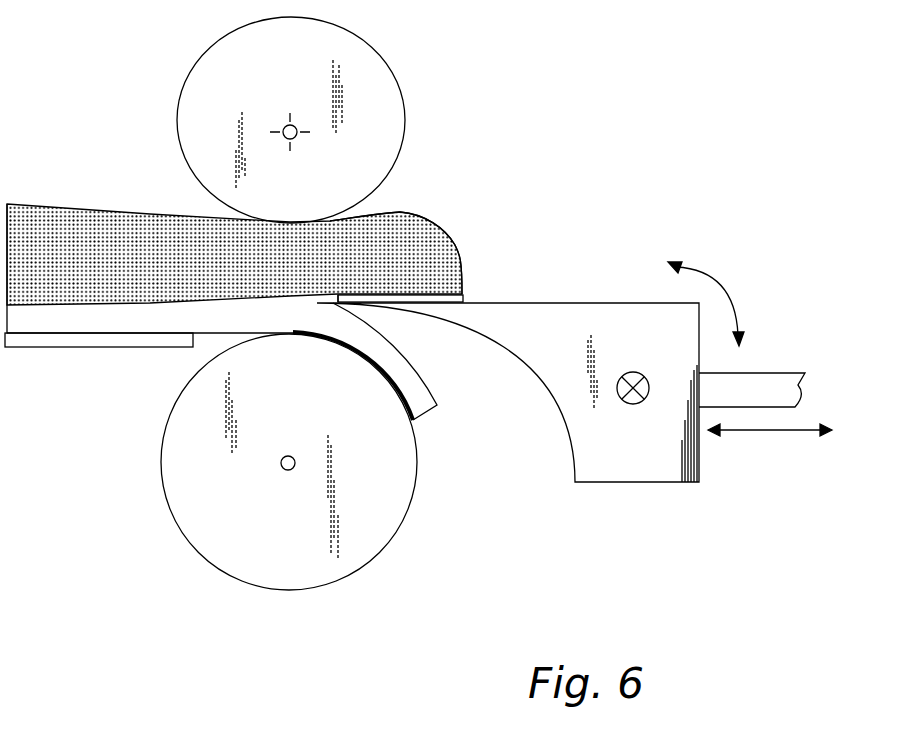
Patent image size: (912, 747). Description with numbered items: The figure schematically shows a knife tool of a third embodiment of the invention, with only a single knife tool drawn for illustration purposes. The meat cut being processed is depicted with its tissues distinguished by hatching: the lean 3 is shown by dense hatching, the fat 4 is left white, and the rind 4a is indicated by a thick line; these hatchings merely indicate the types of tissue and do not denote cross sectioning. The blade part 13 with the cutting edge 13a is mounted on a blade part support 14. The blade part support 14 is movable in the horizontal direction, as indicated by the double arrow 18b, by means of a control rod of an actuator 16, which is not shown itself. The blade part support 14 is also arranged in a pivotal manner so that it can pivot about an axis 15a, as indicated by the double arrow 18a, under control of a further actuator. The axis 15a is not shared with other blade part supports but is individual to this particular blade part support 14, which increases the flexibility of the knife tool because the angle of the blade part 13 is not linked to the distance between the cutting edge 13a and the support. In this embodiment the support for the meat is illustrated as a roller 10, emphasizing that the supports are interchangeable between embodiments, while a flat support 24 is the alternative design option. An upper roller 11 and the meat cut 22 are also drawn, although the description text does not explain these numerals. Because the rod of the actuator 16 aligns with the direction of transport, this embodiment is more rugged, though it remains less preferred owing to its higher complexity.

The sewing material edge 3 is at (428, 235).
The folding member 4 is at (413, 385).
The curved guide surface of folding member 4a is at (372, 372).
The lower feed roller 10 is at (285, 590).
The upper feed roller 11 is at (373, 80).
The guide plate 13 is at (397, 302).
The tip of guide plate 13a is at (338, 298).
The guide holder 14 is at (542, 303).
The pivot axis 15a is at (614, 396).
The drive rod 16 is at (767, 373).
The pivoting movement 18a is at (725, 284).
The linear movement 18b is at (770, 435).
The sewing material 22 is at (72, 302).
The support plate 24 is at (138, 343).